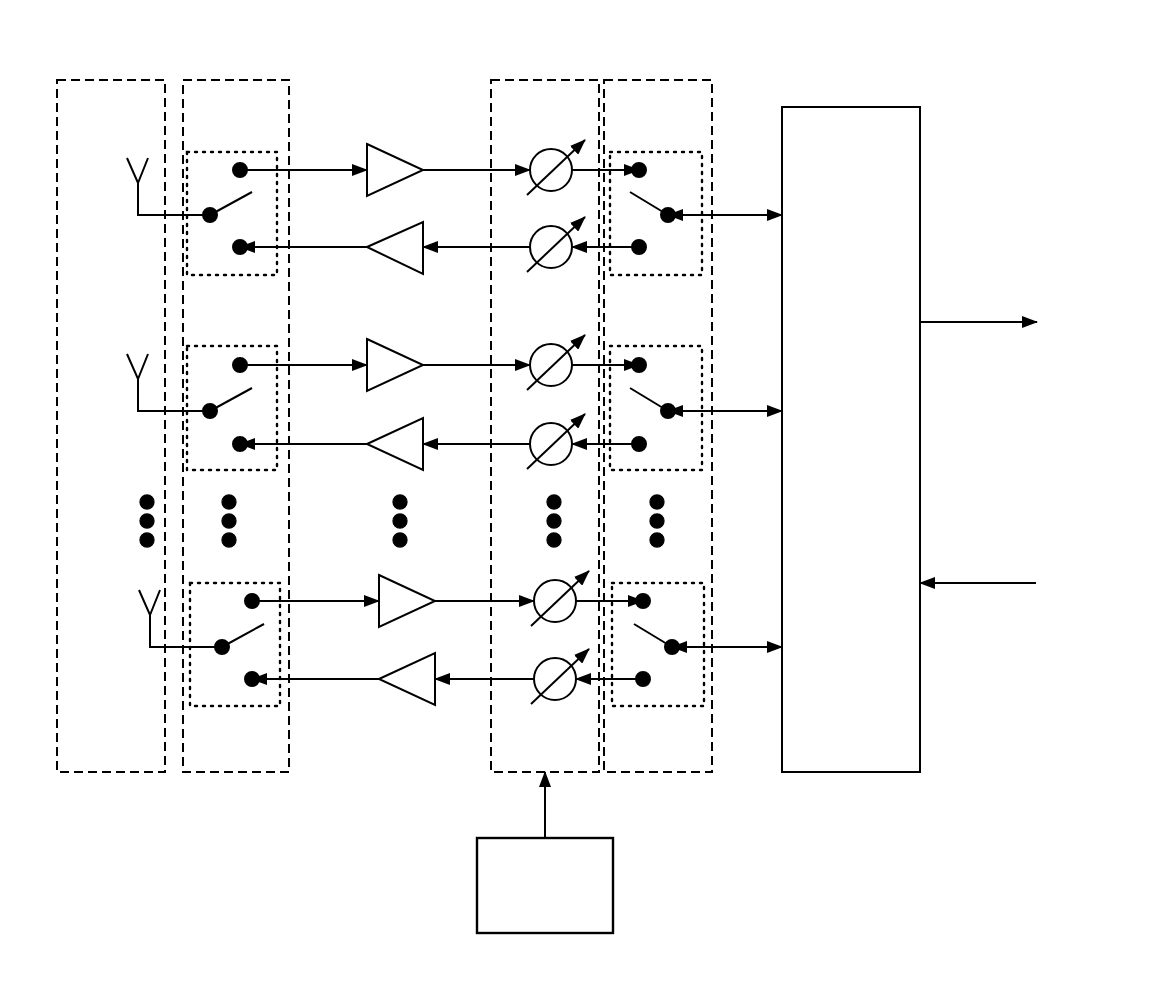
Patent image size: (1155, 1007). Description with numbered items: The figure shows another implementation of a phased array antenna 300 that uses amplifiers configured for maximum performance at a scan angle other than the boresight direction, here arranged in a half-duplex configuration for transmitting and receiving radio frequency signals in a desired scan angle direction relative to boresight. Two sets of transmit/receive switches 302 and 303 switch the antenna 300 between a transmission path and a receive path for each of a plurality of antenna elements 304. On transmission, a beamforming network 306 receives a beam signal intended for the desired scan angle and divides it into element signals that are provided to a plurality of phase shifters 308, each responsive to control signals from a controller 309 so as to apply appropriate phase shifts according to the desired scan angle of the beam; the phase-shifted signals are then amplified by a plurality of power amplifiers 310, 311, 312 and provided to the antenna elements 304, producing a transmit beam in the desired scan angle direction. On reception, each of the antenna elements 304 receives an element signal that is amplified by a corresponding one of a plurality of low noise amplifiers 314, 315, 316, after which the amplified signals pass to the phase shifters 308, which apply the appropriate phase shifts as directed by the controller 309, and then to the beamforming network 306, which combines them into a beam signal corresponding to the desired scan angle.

The phased array antenna 300 is at (1026, 50).
The transmit/receive switch 302 is at (657, 80).
The transmit/receive switch 303 is at (240, 80).
The antenna element 304 is at (112, 80).
The beamforming network 306 is at (798, 107).
The phase shifter 308 is at (545, 80).
The controller 309 is at (613, 877).
The power amplifier 310 is at (402, 226).
The power amplifier 311 is at (400, 423).
The power amplifier 312 is at (413, 662).
The low noise amplifier 314 is at (392, 155).
The low noise amplifier 315 is at (390, 347).
The low noise amplifier 316 is at (404, 585).